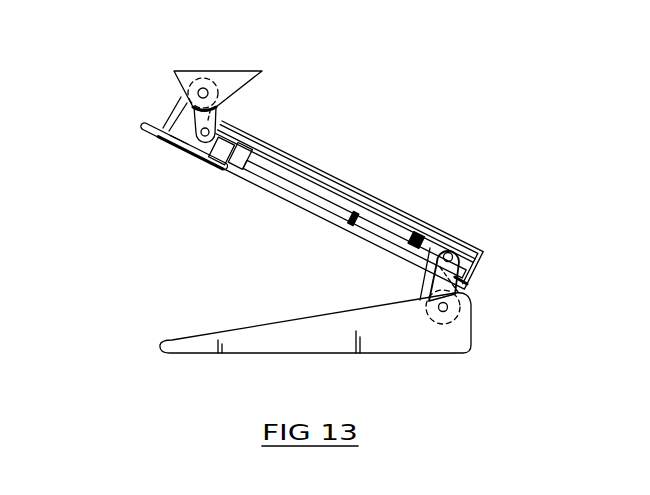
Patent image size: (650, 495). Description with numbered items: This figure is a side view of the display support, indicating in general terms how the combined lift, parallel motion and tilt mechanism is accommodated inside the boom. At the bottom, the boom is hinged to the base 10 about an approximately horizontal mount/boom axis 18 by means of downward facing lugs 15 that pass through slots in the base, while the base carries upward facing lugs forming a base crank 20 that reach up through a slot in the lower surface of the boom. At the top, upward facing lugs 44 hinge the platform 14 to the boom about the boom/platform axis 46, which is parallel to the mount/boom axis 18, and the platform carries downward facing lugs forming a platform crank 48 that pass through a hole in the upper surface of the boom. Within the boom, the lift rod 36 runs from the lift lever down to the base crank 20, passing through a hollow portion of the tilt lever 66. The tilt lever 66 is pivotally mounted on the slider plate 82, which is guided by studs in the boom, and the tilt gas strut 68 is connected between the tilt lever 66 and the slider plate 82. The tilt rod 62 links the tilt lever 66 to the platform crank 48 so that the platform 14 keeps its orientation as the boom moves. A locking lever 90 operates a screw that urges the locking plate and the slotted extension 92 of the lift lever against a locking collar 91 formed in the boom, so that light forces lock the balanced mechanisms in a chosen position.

The base 10 is at (222, 330).
The platform 14 is at (233, 86).
The downward facing lugs 15 is at (422, 277).
The mount/boom axis 18 is at (452, 312).
The base crank 20 is at (443, 285).
The lift rod 36 is at (450, 242).
The upward facing lugs 44 is at (182, 92).
The boom/platform axis 46 is at (203, 88).
The platform crank 48 is at (200, 122).
The tilt rod 62 is at (192, 150).
The tilt lever 66 is at (488, 204).
The tilt gas strut 68 is at (315, 190).
The slider plate 82 is at (362, 228).
The locking lever 90 is at (150, 132).
The locking collar 91 is at (200, 147).
The slotted extension 92 is at (223, 132).